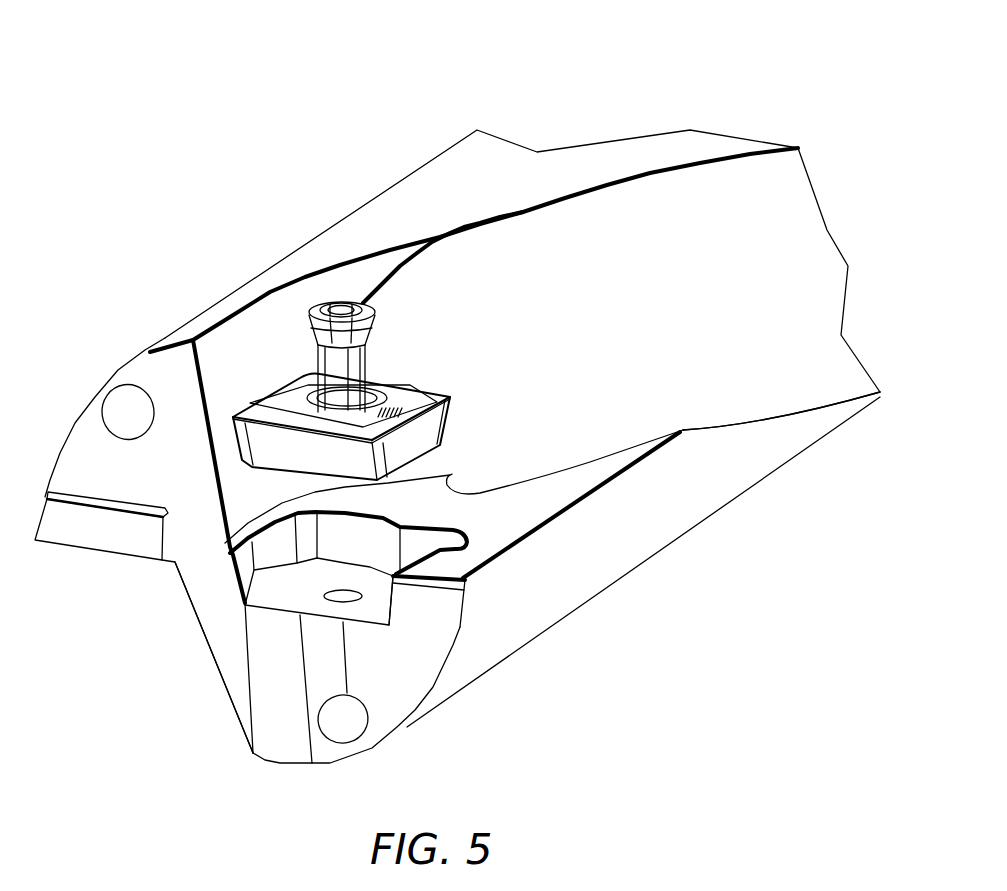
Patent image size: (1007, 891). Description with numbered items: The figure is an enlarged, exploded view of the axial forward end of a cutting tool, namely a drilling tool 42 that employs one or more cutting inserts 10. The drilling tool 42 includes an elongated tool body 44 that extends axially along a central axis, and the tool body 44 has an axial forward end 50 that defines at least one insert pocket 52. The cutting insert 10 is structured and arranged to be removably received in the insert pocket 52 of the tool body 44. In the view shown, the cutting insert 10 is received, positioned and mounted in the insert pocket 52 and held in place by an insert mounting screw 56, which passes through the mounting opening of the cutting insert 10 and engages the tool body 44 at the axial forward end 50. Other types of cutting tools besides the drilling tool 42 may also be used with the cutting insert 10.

The drilling tool 42 is at (605, 112).
The cutting insert 10 is at (260, 386).
The insert mounting screw 56 is at (309, 337).
The tool body 44 is at (795, 468).
The insert pocket 52 is at (378, 610).
The axial forward end 50 is at (220, 683).